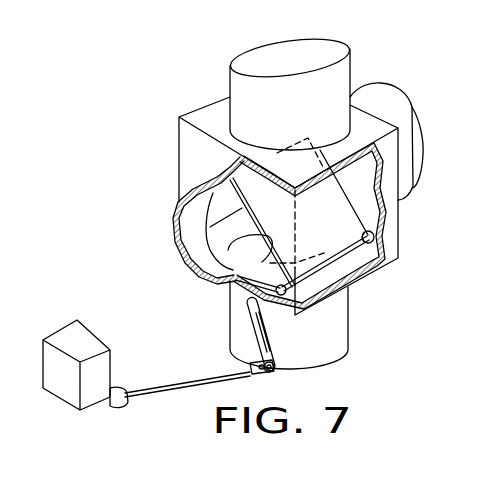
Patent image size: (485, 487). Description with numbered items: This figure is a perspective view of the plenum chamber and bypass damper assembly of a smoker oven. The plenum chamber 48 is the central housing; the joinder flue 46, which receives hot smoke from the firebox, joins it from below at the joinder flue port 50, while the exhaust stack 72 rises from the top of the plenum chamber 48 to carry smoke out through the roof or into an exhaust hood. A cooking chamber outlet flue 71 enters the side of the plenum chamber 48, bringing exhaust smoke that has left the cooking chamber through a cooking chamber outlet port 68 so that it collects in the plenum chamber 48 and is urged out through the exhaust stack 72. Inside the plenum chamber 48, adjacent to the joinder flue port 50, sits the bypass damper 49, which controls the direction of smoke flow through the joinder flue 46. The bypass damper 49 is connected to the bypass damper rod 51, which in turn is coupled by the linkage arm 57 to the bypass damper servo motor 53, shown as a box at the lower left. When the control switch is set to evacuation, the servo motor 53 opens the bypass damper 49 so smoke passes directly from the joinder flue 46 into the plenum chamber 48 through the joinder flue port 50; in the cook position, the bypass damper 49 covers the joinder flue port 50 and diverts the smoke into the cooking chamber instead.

The joinder flue 46 is at (349, 319).
The plenum chamber 48 is at (188, 141).
The bypass damper 49 is at (288, 217).
The joinder flue port 50 is at (236, 281).
The bypass damper rod 51 is at (250, 318).
The bypass damper servo motor 53 is at (82, 333).
The linkage arm 57 is at (183, 377).
The cooking chamber outlet port 68 is at (174, 231).
The cooking chamber outlet flue 71 is at (377, 88).
The exhaust stack 72 is at (351, 48).